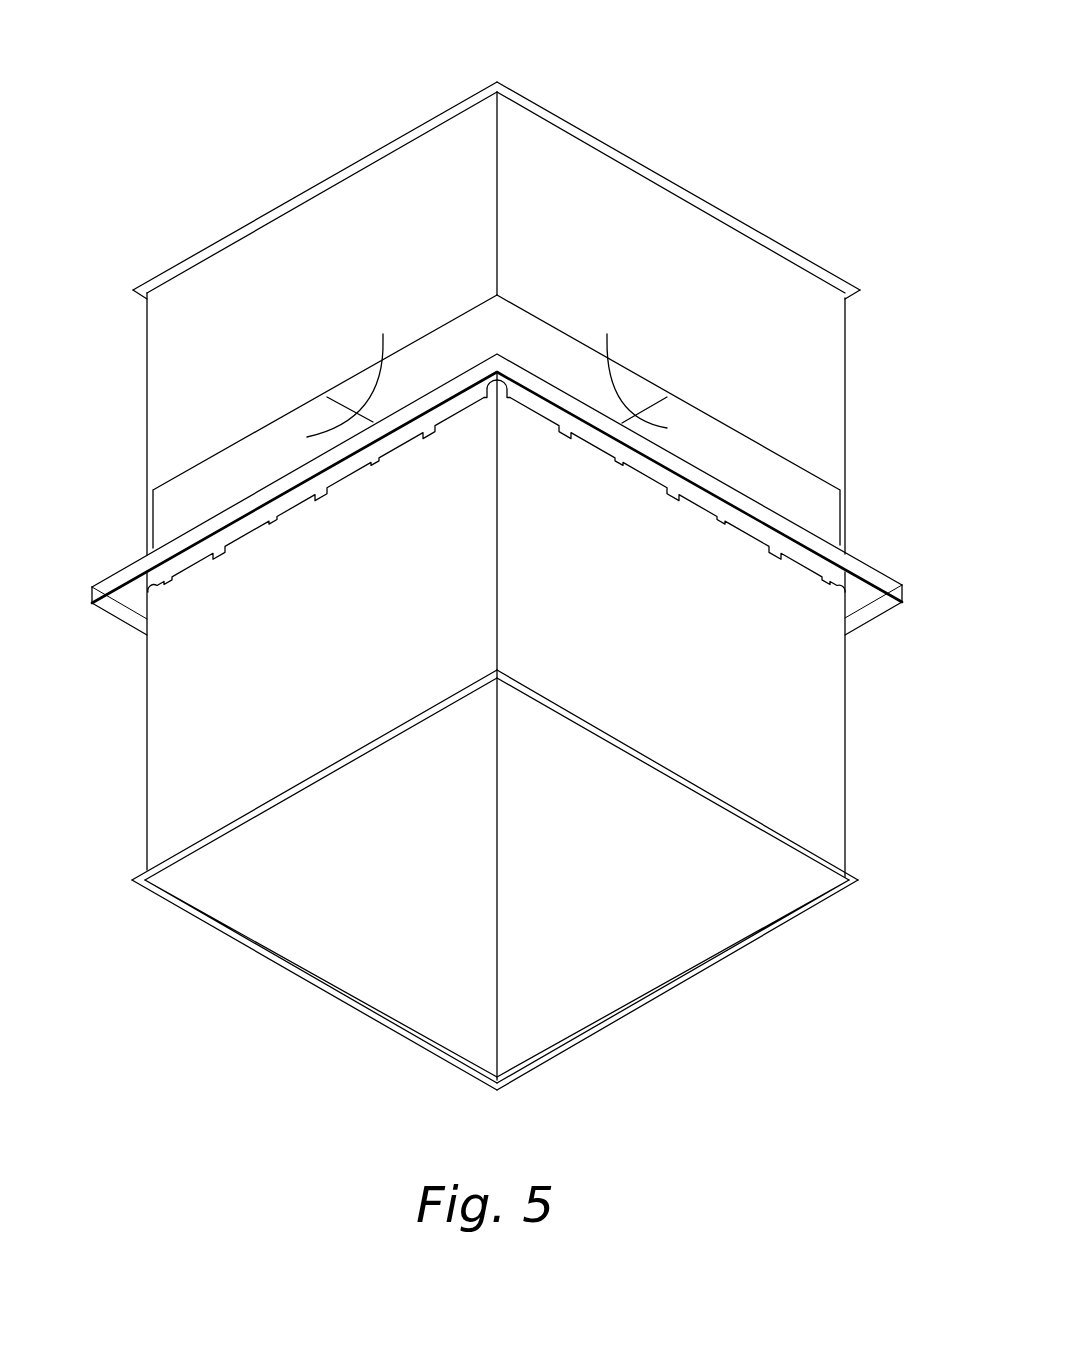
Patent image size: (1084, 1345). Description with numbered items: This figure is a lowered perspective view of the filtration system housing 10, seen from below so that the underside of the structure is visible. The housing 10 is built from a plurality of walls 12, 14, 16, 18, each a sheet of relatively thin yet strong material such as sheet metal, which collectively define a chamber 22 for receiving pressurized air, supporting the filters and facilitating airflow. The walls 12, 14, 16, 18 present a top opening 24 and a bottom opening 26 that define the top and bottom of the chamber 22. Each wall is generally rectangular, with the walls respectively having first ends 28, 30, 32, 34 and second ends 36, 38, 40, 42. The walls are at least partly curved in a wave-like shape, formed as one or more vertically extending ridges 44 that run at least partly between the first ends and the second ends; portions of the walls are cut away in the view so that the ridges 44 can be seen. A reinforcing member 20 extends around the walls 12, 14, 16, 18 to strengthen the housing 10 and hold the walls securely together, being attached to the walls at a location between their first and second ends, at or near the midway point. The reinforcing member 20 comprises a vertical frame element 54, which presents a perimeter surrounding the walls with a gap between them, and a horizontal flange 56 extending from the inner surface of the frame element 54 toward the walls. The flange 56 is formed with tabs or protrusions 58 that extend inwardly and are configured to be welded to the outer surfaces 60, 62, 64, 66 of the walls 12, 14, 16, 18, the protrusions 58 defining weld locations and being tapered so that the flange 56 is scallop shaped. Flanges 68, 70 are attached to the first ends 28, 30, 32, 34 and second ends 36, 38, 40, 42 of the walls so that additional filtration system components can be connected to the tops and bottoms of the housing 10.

The housing 10 is at (779, 56).
The wall 12 is at (835, 352).
The wall 14 is at (160, 410).
The wall 16 is at (245, 913).
The wall 18 is at (680, 960).
The reinforcing member 20 is at (908, 580).
The chamber 22 is at (523, 904).
The top opening 24 is at (498, 303).
The bottom opening 26 is at (814, 894).
The first end 28 is at (622, 158).
The first end 30 is at (338, 200).
The first end 32 is at (133, 306).
The first end 34 is at (862, 305).
The second end 36 is at (710, 795).
The second end 38 is at (332, 770).
The second end 40 is at (360, 1003).
The second end 42 is at (608, 1002).
The ridge 44 is at (212, 436).
The frame element 54 is at (894, 477).
The flange 56 is at (917, 657).
The protrusion 58 is at (322, 487).
The outer surface 60 is at (666, 649).
The outer surface 62 is at (288, 636).
The outer surface 64 is at (143, 698).
The outer surface 66 is at (855, 700).
The flange 68 is at (545, 110).
The flange 70 is at (510, 1088).